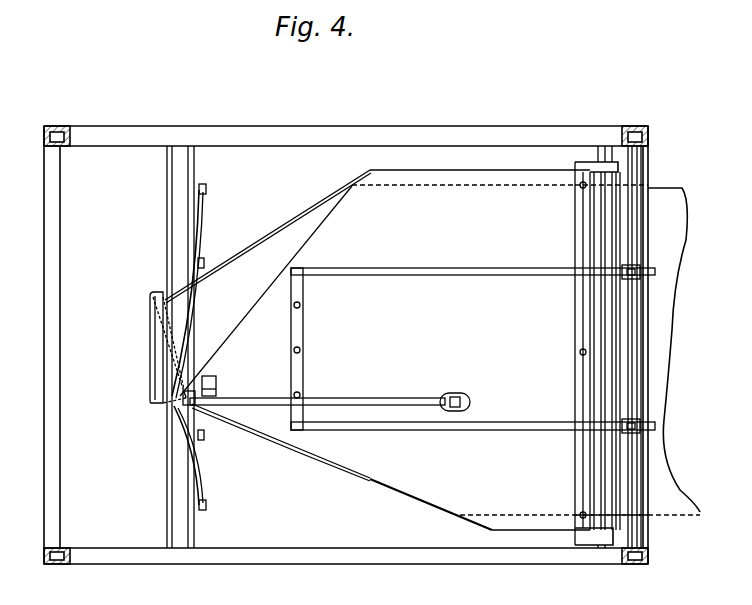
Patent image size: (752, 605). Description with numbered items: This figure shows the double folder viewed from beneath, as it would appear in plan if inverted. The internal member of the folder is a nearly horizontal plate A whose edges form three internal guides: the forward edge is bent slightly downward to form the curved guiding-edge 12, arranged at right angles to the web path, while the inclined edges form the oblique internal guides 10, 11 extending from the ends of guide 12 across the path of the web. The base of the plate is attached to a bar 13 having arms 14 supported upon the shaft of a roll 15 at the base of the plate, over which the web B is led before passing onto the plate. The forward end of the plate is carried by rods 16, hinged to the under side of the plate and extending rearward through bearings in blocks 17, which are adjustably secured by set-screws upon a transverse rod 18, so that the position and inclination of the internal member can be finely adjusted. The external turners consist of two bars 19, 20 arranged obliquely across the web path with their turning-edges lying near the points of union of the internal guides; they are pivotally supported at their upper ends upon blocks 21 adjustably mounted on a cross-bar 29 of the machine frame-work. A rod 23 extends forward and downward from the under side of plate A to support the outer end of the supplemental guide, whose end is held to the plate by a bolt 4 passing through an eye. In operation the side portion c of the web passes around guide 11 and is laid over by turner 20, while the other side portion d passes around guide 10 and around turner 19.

The bolt 4 is at (222, 408).
The internal guide 10 is at (262, 250).
The internal guide 11 is at (310, 453).
The internal guide 12 is at (212, 378).
The bar 13 is at (575, 330).
The arms 14 is at (595, 162).
The roll 15 is at (605, 351).
The rods 16 is at (519, 268).
The bearing-blocks 17 is at (641, 274).
The transverse rod 18 is at (635, 533).
The external turner 19 is at (200, 258).
The external turner 20 is at (200, 446).
The blocks 21 is at (199, 184).
The rod 23 is at (366, 398).
The cross-bar 29 is at (174, 462).
The plate A is at (393, 349).
The web B is at (674, 351).
The side portion of the web c is at (282, 447).
The side portion of the web d is at (182, 347).